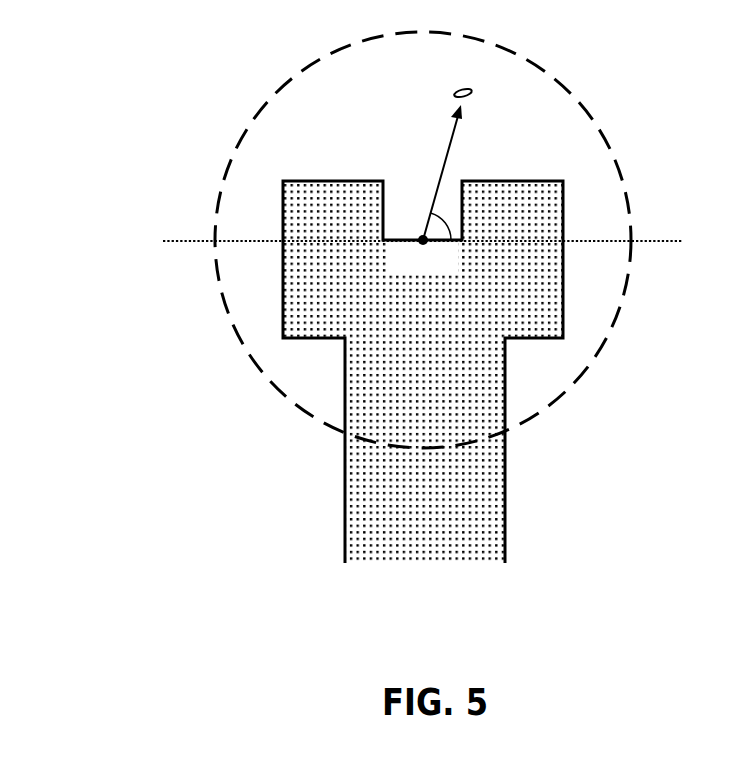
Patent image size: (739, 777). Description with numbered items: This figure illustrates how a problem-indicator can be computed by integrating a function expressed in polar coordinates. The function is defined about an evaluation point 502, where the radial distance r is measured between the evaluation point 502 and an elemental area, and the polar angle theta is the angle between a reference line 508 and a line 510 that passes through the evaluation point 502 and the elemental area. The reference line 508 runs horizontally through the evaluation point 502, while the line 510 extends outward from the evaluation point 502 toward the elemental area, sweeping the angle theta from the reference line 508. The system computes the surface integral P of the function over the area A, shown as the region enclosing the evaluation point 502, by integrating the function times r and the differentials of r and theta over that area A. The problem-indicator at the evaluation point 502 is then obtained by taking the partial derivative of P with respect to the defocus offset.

The evaluation point 502 is at (423, 372).
The reference line 508 is at (445, 239).
The line 510 is at (449, 138).
The area A is at (553, 68).